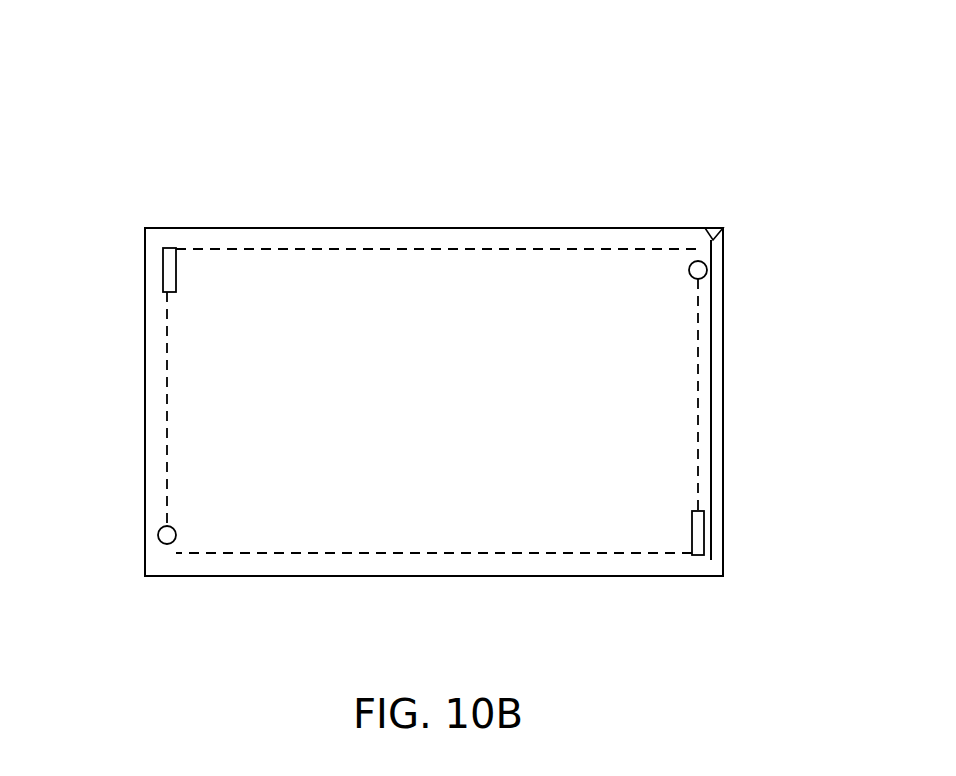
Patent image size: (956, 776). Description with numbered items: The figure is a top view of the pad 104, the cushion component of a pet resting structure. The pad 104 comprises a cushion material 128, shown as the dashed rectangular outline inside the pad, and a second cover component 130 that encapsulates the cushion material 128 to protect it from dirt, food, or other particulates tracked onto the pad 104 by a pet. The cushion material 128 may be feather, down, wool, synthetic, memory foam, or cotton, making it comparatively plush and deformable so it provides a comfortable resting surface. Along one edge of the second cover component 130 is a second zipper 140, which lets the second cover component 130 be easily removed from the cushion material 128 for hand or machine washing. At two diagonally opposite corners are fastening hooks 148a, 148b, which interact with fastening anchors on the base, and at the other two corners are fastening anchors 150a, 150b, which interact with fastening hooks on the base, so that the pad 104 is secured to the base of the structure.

The pad 104 is at (655, 110).
The cushion material 128 is at (450, 555).
The second cover component 130 is at (143, 421).
The second zipper 140 is at (717, 223).
The fastening hook 148a is at (709, 279).
The fastening hook 148b is at (166, 548).
The fastening anchor 150a is at (167, 246).
The fastening anchor 150b is at (697, 558).